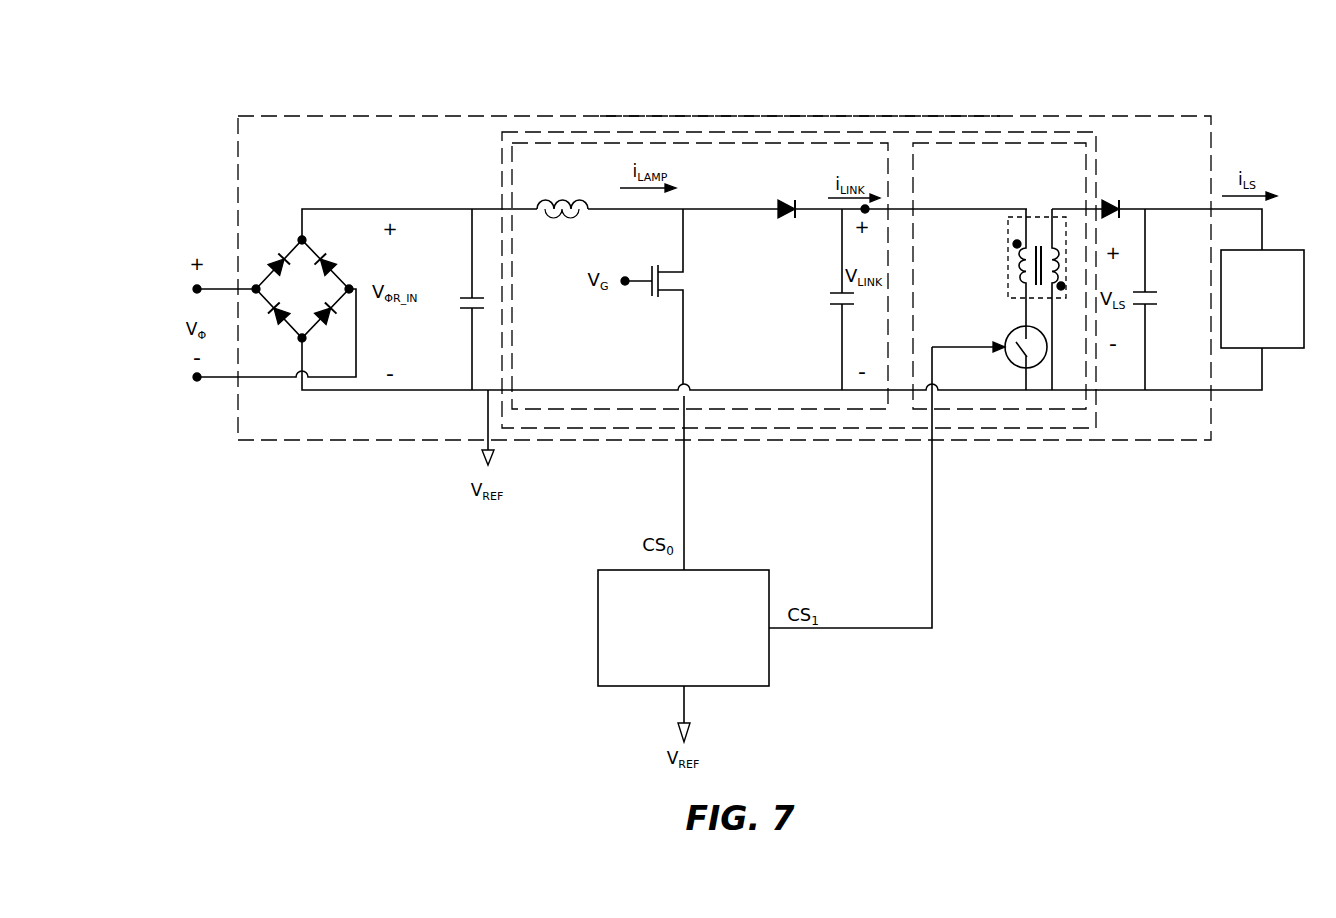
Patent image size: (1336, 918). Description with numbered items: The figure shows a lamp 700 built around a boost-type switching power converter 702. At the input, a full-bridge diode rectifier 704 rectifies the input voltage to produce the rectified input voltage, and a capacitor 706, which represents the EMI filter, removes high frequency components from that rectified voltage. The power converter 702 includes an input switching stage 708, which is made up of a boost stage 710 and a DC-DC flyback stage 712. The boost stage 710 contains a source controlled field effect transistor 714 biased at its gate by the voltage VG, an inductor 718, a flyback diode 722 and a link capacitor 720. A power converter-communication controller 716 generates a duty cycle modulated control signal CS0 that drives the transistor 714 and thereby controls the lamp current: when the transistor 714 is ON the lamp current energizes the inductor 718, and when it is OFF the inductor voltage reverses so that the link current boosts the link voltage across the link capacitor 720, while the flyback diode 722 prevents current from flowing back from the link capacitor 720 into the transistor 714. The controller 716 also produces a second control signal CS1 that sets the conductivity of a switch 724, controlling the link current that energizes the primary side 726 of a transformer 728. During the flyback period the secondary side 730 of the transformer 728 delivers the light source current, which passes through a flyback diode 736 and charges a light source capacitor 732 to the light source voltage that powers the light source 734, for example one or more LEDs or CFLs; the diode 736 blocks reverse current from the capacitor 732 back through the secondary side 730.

The lamp 700 is at (1193, 88).
The power converter 702 is at (806, 116).
The full-bridge diode rectifier 704 is at (302, 289).
The capacitor 706 is at (470, 311).
The input switching stage 708 is at (553, 132).
The boost stage 710 is at (600, 143).
The DC-DC flyback stage 712 is at (943, 143).
The source controlled field effect transistor 714 is at (650, 274).
The power converter-communication controller 716 is at (683, 628).
The inductor 718 is at (563, 222).
The link capacitor 720 is at (838, 306).
The flyback diode 722 is at (794, 198).
The switch 724 is at (1006, 333).
The primary side 726 is at (1018, 250).
The transformer 728 is at (1027, 280).
The secondary side 730 is at (1057, 287).
The light source capacitor 732 is at (1152, 297).
The light source 734 is at (1262, 299).
The flyback diode 736 is at (1112, 200).